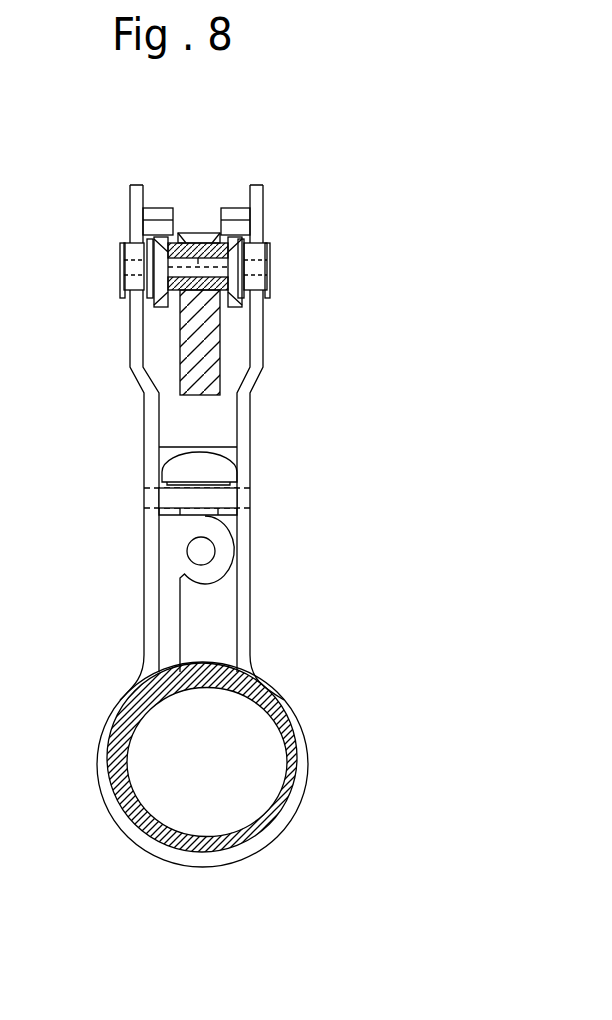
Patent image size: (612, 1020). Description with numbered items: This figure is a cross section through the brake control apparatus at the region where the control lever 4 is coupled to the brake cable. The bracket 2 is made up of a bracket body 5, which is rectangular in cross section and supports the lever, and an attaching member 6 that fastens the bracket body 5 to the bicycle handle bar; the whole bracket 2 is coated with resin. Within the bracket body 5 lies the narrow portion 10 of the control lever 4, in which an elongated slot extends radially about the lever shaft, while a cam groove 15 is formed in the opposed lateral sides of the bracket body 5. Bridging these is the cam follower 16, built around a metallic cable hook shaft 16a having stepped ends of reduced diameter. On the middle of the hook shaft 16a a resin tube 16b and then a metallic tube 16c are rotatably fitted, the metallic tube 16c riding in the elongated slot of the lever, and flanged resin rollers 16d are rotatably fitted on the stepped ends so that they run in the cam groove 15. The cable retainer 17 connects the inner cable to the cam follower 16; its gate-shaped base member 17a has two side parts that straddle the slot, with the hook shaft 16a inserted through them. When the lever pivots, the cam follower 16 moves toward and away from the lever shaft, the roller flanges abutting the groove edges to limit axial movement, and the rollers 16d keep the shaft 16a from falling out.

The bracket 2 is at (247, 691).
The control lever 4 is at (288, 788).
The bracket body 5 is at (252, 585).
The attaching member 6 is at (278, 685).
The narrow portion 10 is at (220, 358).
The cam groove 15 is at (126, 262).
The cam follower 16 is at (194, 226).
The cable hook shaft 16a is at (198, 233).
The resin tube 16b is at (208, 233).
The metallic tube 16c is at (182, 235).
The resin rollers 16d is at (122, 288).
The cable retainer 17 is at (137, 476).
The base member 17a is at (162, 299).